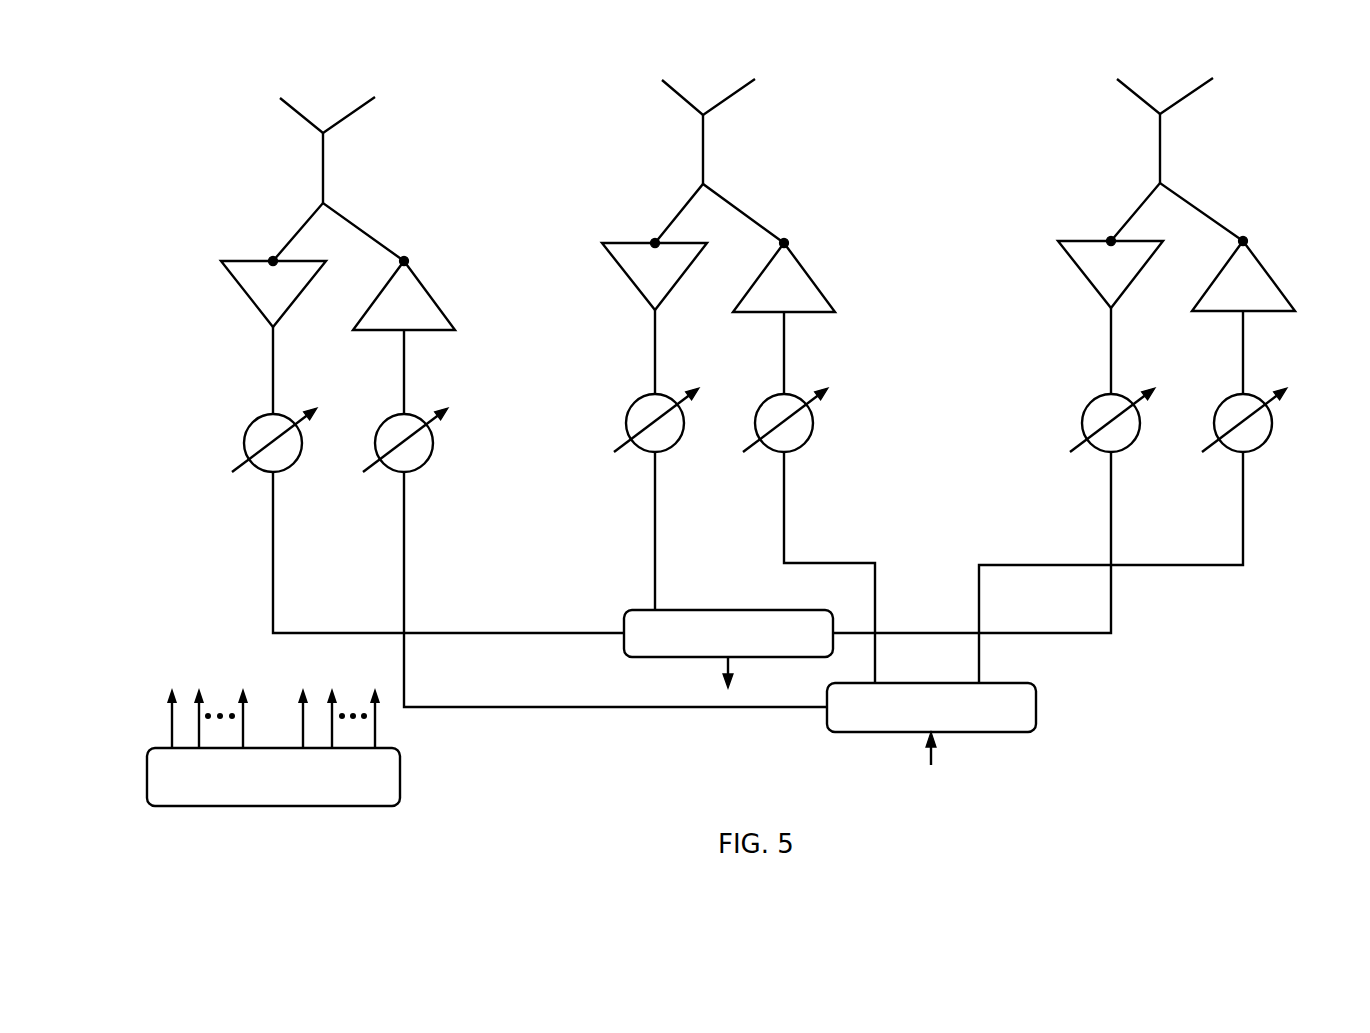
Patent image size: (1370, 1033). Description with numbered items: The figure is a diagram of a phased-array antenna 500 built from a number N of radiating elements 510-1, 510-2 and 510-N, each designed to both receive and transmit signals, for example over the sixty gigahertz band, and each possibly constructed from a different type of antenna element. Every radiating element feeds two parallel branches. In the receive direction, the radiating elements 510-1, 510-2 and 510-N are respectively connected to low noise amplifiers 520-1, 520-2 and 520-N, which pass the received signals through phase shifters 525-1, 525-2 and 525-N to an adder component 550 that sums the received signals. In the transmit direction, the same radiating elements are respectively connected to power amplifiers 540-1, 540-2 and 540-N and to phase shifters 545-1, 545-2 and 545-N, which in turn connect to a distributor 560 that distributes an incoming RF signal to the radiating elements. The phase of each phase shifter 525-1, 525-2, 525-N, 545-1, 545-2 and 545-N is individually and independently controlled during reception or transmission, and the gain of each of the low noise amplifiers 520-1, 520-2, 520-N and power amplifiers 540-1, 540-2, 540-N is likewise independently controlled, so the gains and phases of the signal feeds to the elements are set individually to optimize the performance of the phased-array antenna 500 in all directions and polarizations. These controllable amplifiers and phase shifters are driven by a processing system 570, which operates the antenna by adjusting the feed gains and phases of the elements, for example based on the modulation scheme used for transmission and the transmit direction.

The phased-array antenna 500 is at (1330, 75).
The radiating element 510-1 is at (323, 168).
The radiating element 510-2 is at (703, 151).
The radiating element 510-N is at (1160, 149).
The low noise amplifier 520-1 is at (248, 296).
The low noise amplifier 520-2 is at (629, 278).
The low noise amplifier 520-N is at (1086, 276).
The phase shifter 525-1 is at (248, 432).
The phase shifter 525-2 is at (629, 411).
The phase shifter 525-N is at (1085, 411).
The power amplifier 540-1 is at (429, 293).
The power amplifier 540-2 is at (811, 279).
The power amplifier 540-N is at (1270, 278).
The phase shifter 545-1 is at (429, 461).
The phase shifter 545-2 is at (808, 440).
The phase shifter 545-N is at (1267, 440).
The adder component 550 is at (698, 610).
The distributor 560 is at (1013, 683).
The processing system 570 is at (332, 806).